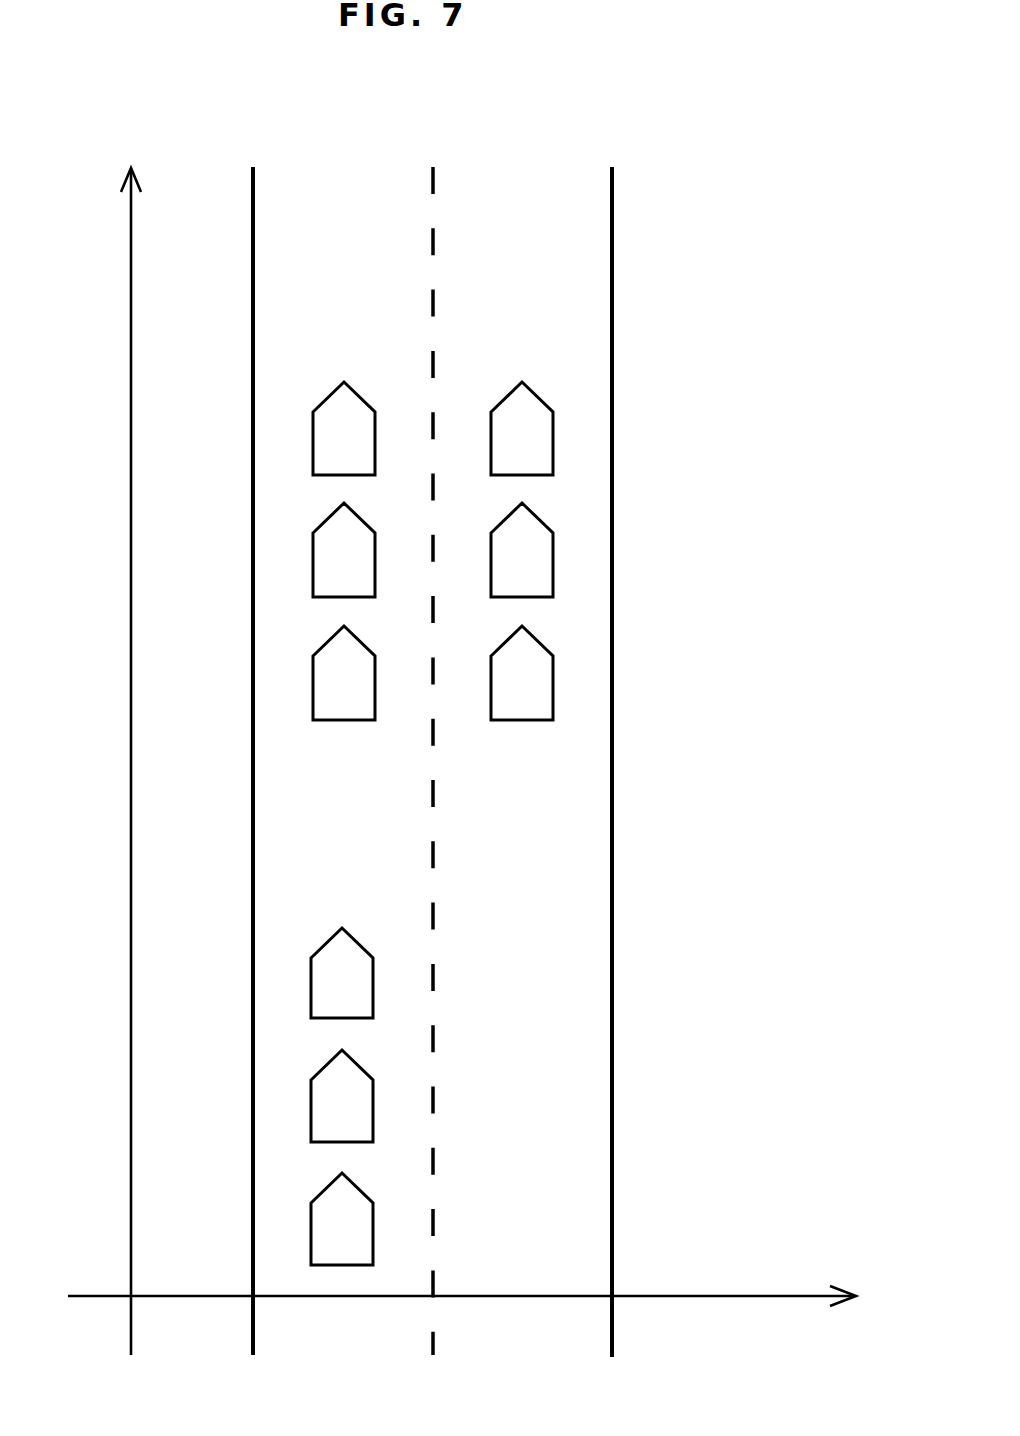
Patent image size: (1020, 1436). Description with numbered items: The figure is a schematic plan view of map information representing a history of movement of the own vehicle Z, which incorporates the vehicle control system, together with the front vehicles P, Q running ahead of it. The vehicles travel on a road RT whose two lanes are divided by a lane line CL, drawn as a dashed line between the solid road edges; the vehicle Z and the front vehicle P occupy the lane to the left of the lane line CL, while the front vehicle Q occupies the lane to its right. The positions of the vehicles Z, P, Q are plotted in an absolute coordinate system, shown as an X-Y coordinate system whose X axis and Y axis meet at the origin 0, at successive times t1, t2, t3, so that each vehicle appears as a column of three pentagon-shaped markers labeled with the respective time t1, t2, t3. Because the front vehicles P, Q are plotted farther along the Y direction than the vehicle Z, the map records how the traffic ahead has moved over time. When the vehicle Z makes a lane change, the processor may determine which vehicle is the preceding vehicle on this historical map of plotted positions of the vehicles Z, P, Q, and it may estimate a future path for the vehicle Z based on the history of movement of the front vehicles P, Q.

The road RT is at (631, 1147).
The lane line CL is at (435, 1222).
The front vehicle P is at (344, 551).
The front vehicle Q is at (522, 551).
The vehicle Z is at (342, 1096).
The time t1 is at (486, 960).
The time t2 is at (486, 837).
The time t3 is at (486, 715).
The X axis of absolute coordinate system X is at (475, 1296).
The Y axis of absolute coordinate system Y is at (131, 741).
The origin 0 is at (103, 1321).